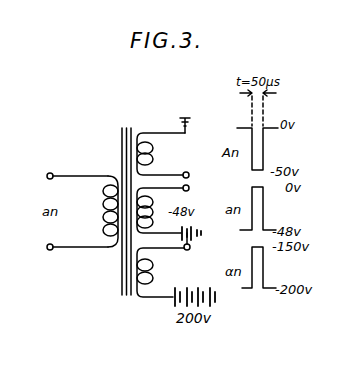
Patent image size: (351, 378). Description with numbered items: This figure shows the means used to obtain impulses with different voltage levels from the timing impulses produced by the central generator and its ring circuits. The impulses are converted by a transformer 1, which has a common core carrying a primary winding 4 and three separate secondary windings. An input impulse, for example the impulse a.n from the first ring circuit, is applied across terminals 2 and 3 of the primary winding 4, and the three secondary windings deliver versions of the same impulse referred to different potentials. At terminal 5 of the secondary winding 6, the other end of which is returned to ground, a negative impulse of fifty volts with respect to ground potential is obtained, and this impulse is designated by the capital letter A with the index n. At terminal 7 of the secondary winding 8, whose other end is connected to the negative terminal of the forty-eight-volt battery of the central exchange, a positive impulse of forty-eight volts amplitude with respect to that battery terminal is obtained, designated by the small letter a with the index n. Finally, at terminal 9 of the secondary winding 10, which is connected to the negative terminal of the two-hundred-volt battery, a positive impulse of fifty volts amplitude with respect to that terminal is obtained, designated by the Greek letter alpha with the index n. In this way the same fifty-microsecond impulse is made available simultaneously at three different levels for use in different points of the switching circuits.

The transformer 1 is at (126, 202).
The terminal 2 is at (76, 167).
The terminal 3 is at (77, 258).
The primary winding 4 is at (100, 211).
The terminal 5 is at (193, 170).
The secondary winding 6 is at (163, 146).
The terminal 7 is at (194, 189).
The secondary winding 8 is at (169, 214).
The terminal 9 is at (190, 251).
The secondary winding 10 is at (176, 277).